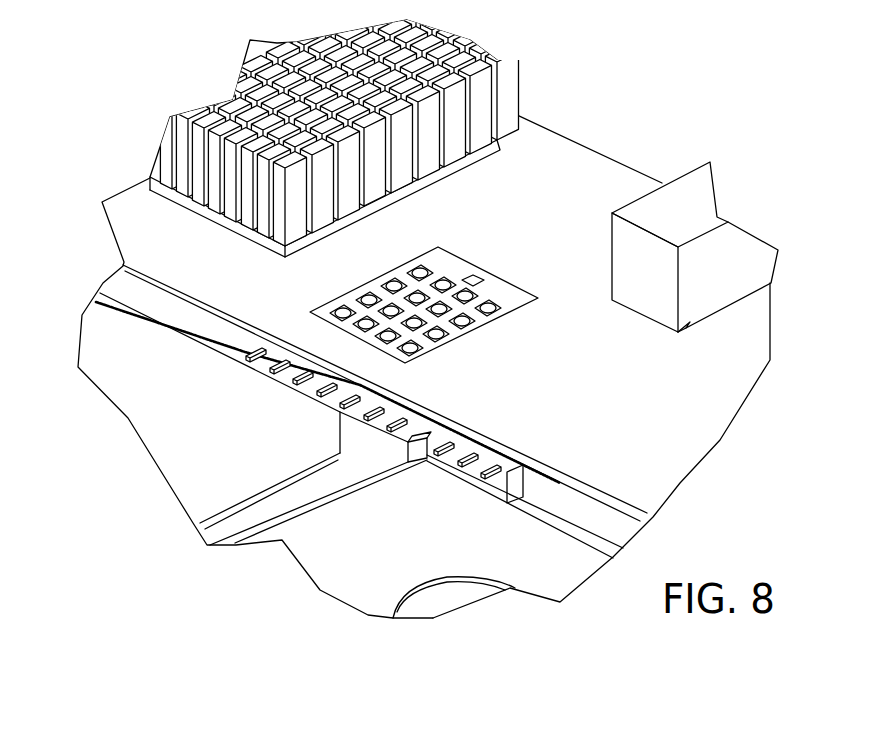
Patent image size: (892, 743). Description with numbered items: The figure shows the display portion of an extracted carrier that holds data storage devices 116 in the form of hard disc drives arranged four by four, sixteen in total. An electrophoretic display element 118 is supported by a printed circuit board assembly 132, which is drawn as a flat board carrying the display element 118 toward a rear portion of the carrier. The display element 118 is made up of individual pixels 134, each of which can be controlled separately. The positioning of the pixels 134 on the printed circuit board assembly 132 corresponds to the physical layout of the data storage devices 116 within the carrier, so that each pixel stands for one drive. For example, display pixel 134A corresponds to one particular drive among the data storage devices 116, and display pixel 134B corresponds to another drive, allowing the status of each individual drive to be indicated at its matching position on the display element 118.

The data storage devices 116 is at (110, 350).
The electrophoretic display element 118 is at (320, 283).
The printed circuit board assembly 132 is at (505, 290).
The pixels 134 is at (395, 268).
The display pixel 134A is at (421, 269).
The display pixel 134B is at (413, 318).